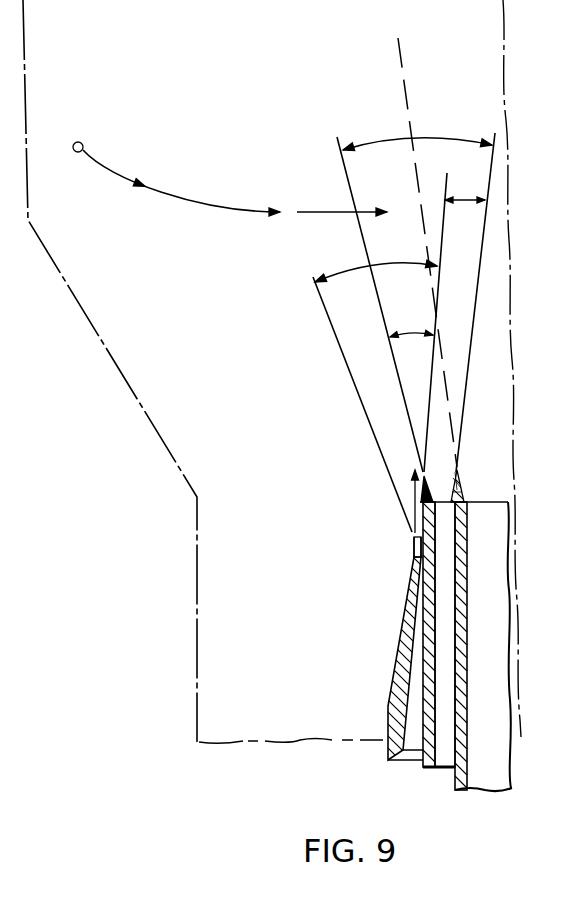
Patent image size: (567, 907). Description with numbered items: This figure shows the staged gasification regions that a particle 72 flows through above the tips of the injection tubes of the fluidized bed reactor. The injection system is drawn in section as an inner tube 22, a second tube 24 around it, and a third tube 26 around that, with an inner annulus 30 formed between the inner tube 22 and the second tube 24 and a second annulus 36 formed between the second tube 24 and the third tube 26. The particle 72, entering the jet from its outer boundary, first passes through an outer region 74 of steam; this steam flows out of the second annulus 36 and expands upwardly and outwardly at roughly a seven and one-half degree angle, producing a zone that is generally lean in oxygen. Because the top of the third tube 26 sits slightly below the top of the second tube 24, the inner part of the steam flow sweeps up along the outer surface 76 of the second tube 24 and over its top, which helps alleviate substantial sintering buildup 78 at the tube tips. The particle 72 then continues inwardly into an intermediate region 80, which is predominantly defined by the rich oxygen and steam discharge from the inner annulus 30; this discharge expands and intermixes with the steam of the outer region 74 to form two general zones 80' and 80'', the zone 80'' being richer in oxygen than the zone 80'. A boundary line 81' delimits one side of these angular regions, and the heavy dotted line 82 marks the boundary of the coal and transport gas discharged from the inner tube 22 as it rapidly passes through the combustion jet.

The inner tube 22 is at (458, 615).
The second tube 24 is at (427, 593).
The third tube 26 is at (403, 648).
The inner annulus 30 is at (443, 565).
The second annulus 36 is at (413, 712).
The particle 72 is at (84, 143).
The outer region 74 is at (362, 272).
The outer surface 76 is at (420, 554).
The sintering buildup 78 is at (453, 488).
The intermediate region 80 is at (417, 125).
The zone 80' is at (411, 319).
The zone 80'' is at (491, 302).
The reference line 81' is at (362, 304).
The heavy dotted line 82 is at (405, 97).